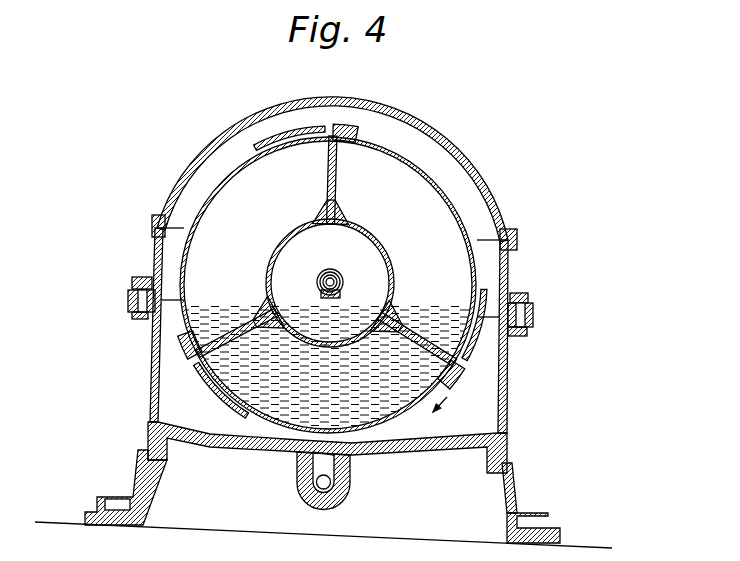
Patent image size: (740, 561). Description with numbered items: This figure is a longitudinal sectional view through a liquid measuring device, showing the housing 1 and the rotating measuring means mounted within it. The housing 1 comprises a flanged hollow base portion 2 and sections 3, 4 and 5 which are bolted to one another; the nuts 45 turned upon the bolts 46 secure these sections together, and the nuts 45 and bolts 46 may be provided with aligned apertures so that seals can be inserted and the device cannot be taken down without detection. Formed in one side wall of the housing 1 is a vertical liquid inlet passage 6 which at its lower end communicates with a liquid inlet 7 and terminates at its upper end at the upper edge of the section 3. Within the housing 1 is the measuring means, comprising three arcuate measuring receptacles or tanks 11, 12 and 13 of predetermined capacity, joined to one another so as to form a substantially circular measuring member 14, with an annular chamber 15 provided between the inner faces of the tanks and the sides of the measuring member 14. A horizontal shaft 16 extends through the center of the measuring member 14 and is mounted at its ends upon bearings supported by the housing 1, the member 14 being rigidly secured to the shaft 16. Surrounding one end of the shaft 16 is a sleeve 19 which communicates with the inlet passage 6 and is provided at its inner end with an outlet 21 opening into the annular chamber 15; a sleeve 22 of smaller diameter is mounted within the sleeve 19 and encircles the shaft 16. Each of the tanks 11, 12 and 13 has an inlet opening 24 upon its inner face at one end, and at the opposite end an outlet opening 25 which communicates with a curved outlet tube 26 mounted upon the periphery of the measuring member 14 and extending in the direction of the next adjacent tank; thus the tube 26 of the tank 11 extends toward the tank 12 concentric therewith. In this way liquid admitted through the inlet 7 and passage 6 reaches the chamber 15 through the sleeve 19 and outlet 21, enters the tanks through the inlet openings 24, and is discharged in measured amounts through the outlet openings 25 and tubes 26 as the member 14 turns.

The housing 1 is at (353, 285).
The flanged hollow base portion 2 is at (528, 527).
The housing section 3 is at (509, 373).
The housing section 4 is at (512, 270).
The housing section 5 is at (497, 210).
The vertical liquid inlet passage 6 is at (295, 462).
The liquid inlet 7 is at (315, 493).
The arcuate measuring receptacle or tank 11 is at (393, 395).
The arcuate measuring receptacle or tank 12 is at (407, 209).
The arcuate measuring receptacle or tank 13 is at (238, 219).
The measuring member 14 is at (436, 170).
The annular chamber 15 is at (313, 243).
The horizontal shaft 16 is at (318, 276).
The sleeve 19 is at (338, 271).
The outlet 21 is at (321, 294).
The sleeve 22 is at (344, 282).
The inlet opening 24 is at (324, 216).
The outlet opening 25 is at (346, 136).
The curved outlet tube 26 is at (262, 146).
The nut 45 is at (128, 283).
The bolt 46 is at (138, 275).